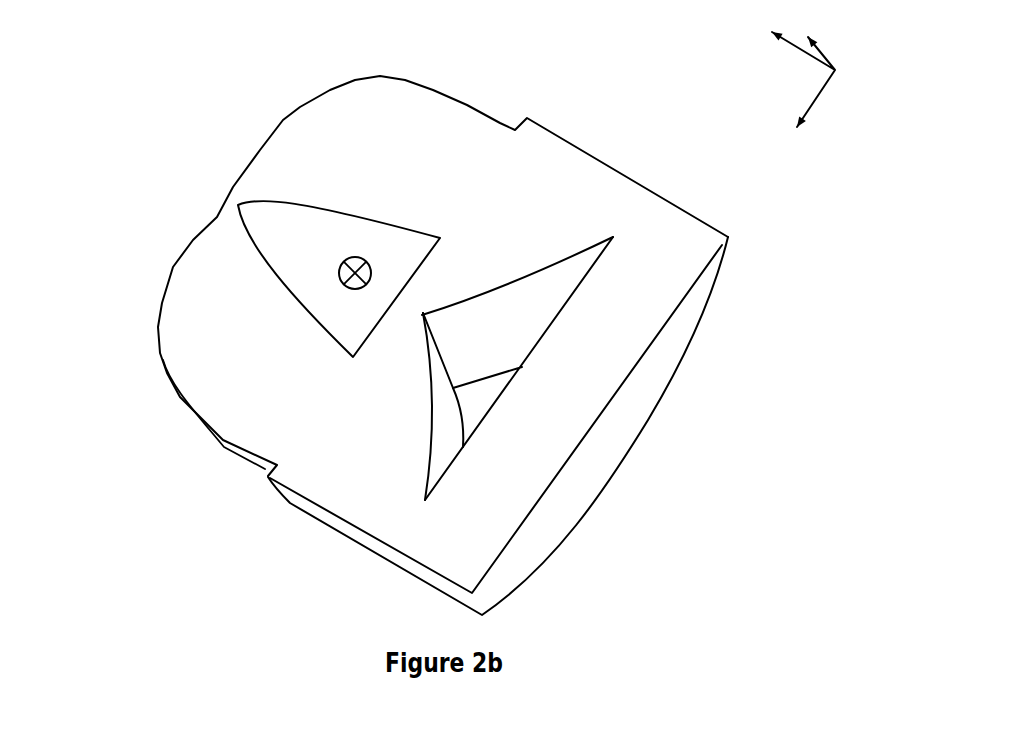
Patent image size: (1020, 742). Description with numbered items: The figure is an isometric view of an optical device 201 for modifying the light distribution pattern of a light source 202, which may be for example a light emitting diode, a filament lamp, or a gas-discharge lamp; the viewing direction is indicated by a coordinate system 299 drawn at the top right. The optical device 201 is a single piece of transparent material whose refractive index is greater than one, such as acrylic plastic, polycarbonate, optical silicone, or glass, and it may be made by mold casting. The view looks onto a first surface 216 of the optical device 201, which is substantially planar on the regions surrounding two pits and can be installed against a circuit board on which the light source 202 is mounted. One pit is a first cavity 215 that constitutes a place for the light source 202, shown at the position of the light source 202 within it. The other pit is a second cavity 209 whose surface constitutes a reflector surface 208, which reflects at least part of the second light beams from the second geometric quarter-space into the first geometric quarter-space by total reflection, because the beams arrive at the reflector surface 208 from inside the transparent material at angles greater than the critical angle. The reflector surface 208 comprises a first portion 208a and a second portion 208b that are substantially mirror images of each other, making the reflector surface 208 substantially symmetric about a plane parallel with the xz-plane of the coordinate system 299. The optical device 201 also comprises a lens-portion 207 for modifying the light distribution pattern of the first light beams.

The optical device 201 is at (195, 108).
The light source 202 is at (355, 257).
The lens-portion 207 is at (253, 326).
The reflector surface 208 is at (511, 313).
The first portion 208a is at (442, 447).
The second portion 208b is at (536, 294).
The second cavity 209 is at (493, 350).
The first cavity 215 is at (323, 256).
The first surface 216 is at (299, 422).
The coordinate system 299 is at (810, 94).